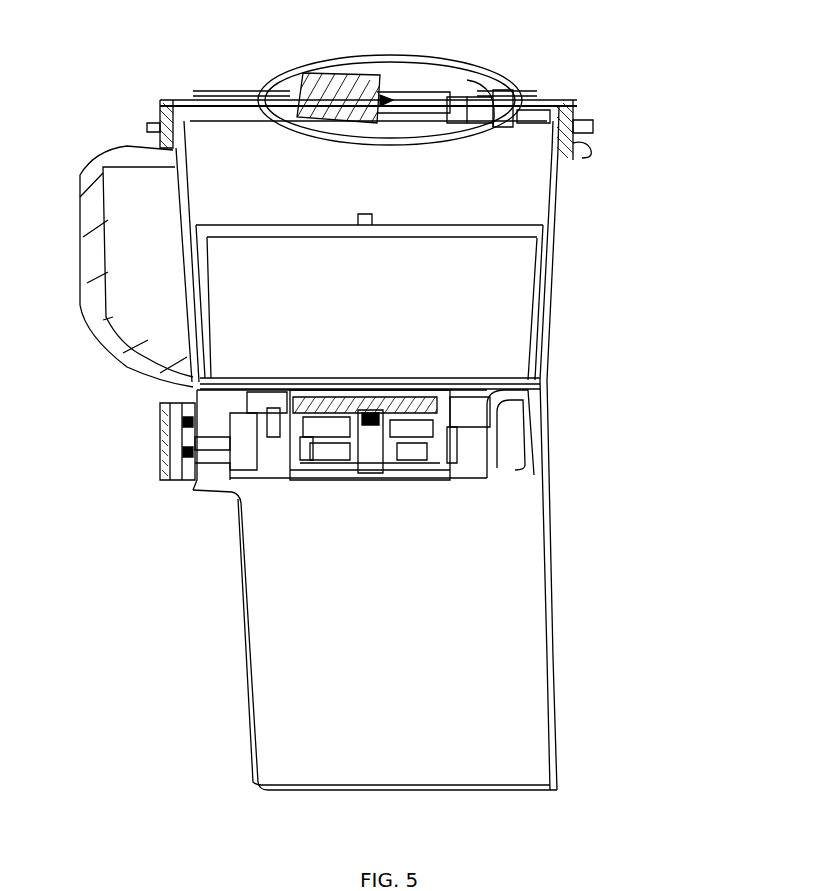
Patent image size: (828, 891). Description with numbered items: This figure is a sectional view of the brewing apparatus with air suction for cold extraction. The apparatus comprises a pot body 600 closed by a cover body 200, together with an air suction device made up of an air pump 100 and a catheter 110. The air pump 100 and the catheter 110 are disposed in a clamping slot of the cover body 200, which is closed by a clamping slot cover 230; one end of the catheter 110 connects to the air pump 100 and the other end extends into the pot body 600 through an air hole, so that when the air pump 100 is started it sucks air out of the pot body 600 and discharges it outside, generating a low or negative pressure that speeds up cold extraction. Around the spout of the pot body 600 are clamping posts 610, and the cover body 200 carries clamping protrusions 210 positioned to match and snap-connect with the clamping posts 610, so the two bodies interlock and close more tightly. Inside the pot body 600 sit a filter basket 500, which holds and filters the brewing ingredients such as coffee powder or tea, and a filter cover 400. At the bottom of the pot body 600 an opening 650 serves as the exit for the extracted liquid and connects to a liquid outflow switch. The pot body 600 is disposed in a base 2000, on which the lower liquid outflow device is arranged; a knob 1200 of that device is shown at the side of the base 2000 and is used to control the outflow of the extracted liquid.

The air pump 100 is at (293, 98).
The catheter 110 is at (423, 88).
The cover body 200 is at (552, 110).
The clamping protrusions 210 is at (578, 125).
The clamping slot cover 230 is at (287, 63).
The filter cover 400 is at (490, 223).
The filter basket 500 is at (488, 327).
The pot body 600 is at (555, 185).
The clamping posts 610 is at (588, 155).
The opening 650 is at (383, 402).
The knob 1200 is at (167, 437).
The base 2000 is at (493, 633).